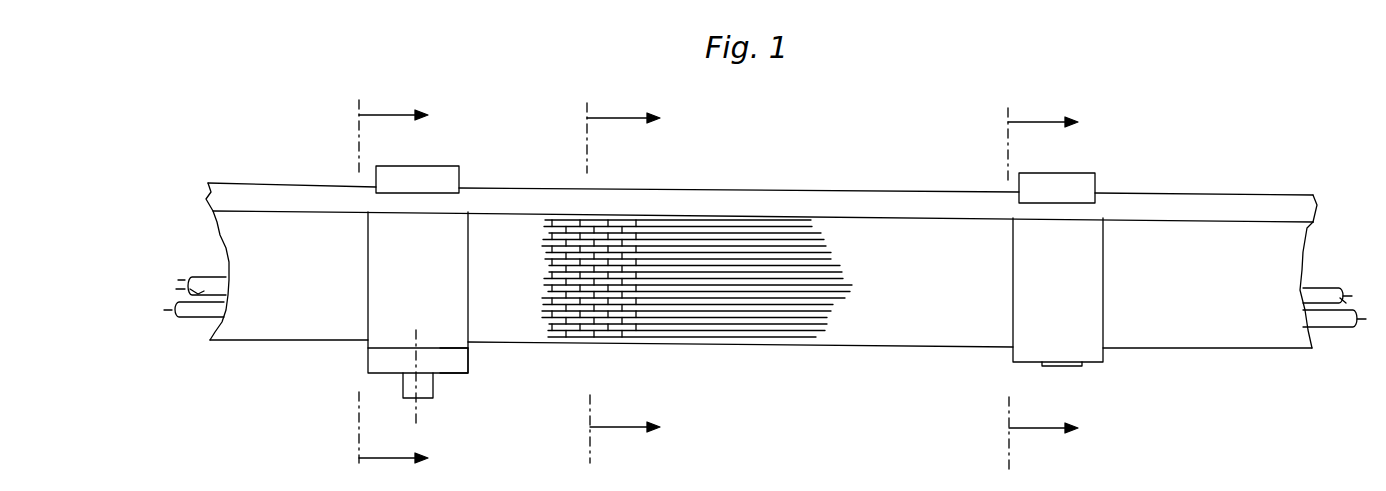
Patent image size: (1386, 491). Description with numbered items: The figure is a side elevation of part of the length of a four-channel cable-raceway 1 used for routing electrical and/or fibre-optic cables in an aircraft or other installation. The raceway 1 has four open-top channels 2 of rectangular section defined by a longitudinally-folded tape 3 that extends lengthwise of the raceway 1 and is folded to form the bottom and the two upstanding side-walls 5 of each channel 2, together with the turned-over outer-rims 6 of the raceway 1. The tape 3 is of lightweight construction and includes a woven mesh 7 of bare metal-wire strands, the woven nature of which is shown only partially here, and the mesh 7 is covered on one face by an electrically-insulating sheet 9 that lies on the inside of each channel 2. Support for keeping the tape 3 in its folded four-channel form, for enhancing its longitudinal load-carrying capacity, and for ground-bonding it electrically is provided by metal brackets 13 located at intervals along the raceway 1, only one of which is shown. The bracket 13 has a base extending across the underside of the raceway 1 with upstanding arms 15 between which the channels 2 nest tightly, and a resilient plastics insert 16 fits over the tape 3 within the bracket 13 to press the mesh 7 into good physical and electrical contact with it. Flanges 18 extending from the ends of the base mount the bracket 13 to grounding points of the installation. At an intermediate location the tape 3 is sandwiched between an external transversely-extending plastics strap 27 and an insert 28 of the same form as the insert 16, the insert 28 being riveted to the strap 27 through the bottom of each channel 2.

The cable-raceway 1 is at (822, 147).
The open-top channel 2 is at (623, 286).
The longitudinally-folded tape 3 is at (740, 341).
The side-wall 5 is at (1193, 333).
The outer-rim 6 is at (1298, 170).
The woven mesh 7 is at (593, 342).
The electrically-insulating sheet 9 is at (1043, 291).
The metal bracket 13 is at (368, 348).
The arm 15 is at (455, 318).
The plastics insert 16 is at (435, 177).
The flange 18 is at (447, 363).
The plastics strap 27 is at (1024, 335).
The insert 28 is at (1080, 183).